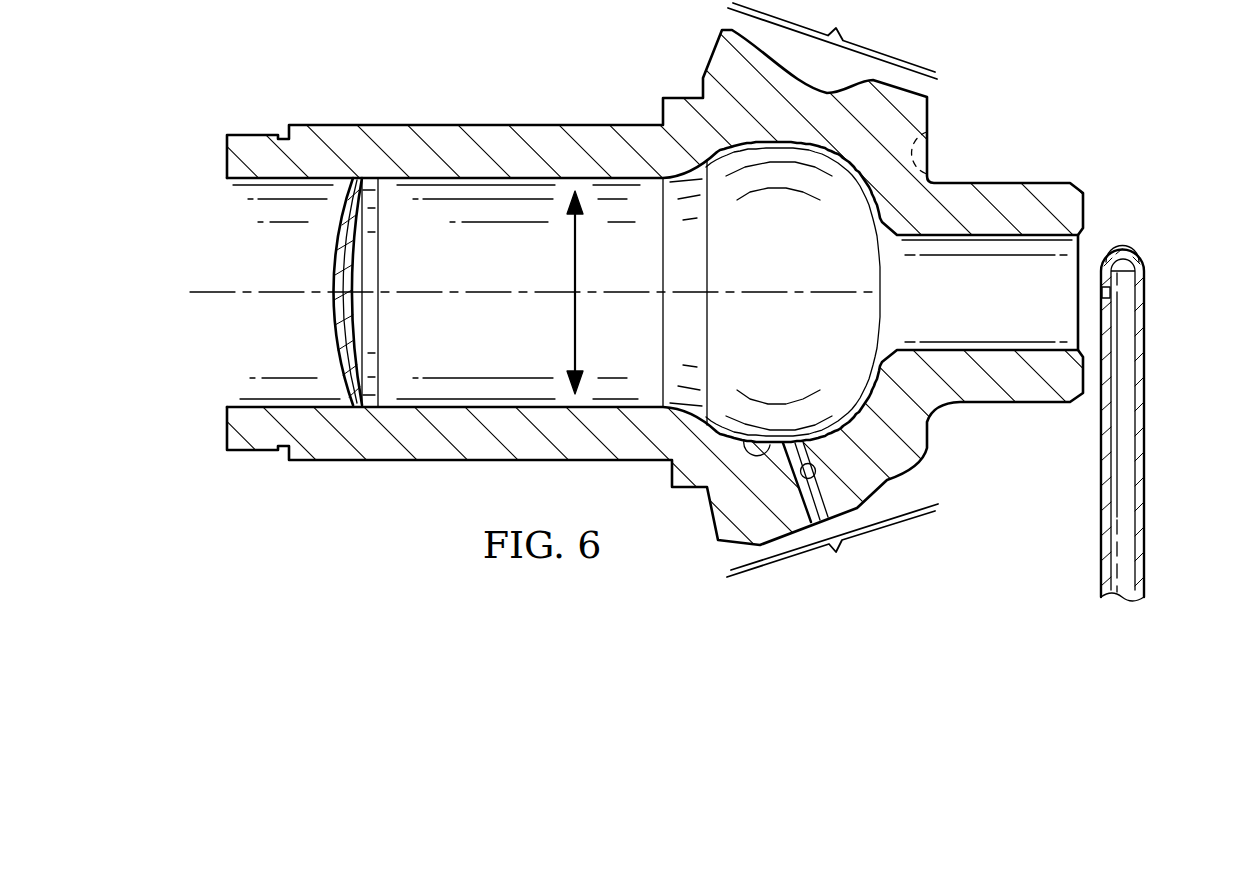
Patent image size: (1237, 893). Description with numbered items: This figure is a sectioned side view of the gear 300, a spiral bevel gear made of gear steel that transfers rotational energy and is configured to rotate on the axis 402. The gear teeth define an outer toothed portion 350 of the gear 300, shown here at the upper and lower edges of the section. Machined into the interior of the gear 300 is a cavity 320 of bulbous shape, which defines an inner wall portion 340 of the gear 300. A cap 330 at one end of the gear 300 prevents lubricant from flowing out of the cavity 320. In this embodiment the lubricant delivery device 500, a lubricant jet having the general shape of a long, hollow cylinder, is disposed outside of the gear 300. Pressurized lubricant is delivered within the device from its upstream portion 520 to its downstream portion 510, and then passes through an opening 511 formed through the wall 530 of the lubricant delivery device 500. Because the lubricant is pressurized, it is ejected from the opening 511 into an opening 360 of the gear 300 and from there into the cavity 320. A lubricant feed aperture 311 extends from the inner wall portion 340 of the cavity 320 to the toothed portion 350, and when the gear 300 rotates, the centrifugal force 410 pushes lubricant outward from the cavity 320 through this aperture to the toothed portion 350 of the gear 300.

The gear 300 is at (449, 92).
The lubricant feed aperture 311 is at (816, 471).
The cavity 320 is at (778, 252).
The cap 330 is at (334, 320).
The inner wall portion 340 is at (761, 450).
The toothed portion 350 is at (832, 294).
The opening 360 is at (966, 310).
The axis 402 is at (521, 262).
The centrifugal force 410 is at (572, 262).
The lubricant delivery device 500 is at (1123, 424).
The downstream portion 510 is at (1124, 283).
The opening 511 is at (1101, 292).
The upstream portion 520 is at (1118, 535).
The wall 530 is at (1141, 418).